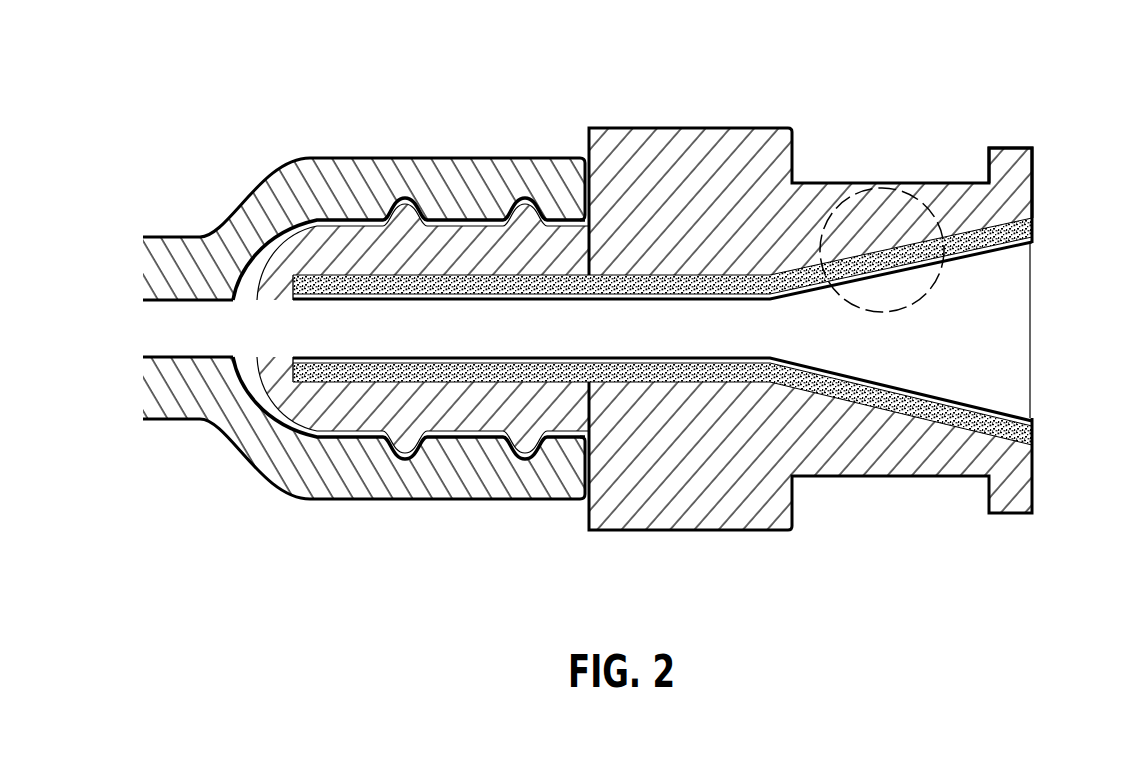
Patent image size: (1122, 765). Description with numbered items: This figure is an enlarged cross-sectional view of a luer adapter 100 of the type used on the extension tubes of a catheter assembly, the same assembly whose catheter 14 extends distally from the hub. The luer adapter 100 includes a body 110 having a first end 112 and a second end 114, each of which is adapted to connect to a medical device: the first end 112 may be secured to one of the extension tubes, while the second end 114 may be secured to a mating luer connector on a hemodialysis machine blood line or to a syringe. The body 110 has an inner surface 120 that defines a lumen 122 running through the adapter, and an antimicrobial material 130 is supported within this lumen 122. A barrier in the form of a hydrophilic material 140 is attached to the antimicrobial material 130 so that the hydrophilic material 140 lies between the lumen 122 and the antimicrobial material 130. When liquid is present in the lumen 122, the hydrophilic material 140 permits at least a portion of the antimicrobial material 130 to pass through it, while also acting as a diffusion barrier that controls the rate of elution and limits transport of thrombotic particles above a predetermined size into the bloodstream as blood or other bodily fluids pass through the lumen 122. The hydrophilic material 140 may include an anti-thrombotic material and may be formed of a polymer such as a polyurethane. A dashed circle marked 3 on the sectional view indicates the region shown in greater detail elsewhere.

The luer adapter 100 is at (628, 93).
The body 110 is at (695, 129).
The first end 112 is at (328, 425).
The second end 114 is at (1007, 147).
The inner surface 120 is at (871, 408).
The lumen 122 is at (1005, 339).
The antimicrobial material 130 is at (1032, 219).
The hydrophilic material 140 is at (1017, 419).
The catheter 14 is at (220, 427).
The detail region of FIG. 3 is at (882, 190).